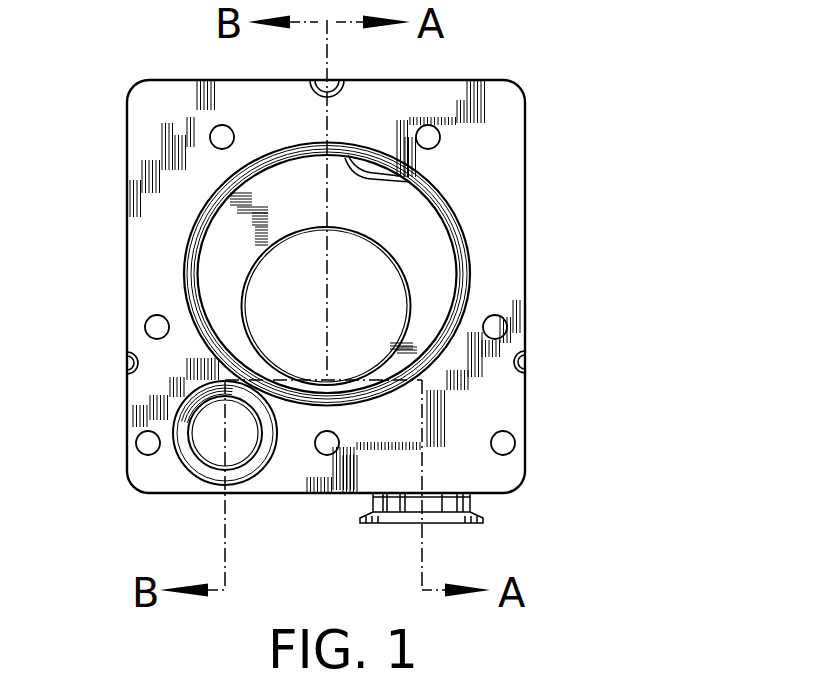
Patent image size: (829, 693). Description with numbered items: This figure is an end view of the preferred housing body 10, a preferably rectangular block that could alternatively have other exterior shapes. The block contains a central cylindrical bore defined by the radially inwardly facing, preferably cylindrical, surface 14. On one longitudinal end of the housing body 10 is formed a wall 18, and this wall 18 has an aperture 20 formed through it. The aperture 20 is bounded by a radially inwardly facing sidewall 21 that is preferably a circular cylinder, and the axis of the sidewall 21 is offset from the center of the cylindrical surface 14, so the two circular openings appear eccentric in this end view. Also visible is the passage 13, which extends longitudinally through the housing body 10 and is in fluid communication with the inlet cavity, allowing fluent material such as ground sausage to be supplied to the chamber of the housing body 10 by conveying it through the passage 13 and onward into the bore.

The housing body 10 is at (538, 62).
The passage 13 is at (186, 410).
The radially inwardly facing cylindrical surface 14 is at (410, 182).
The wall 18 is at (417, 243).
The aperture 20 is at (377, 345).
The sidewall 21 is at (255, 337).